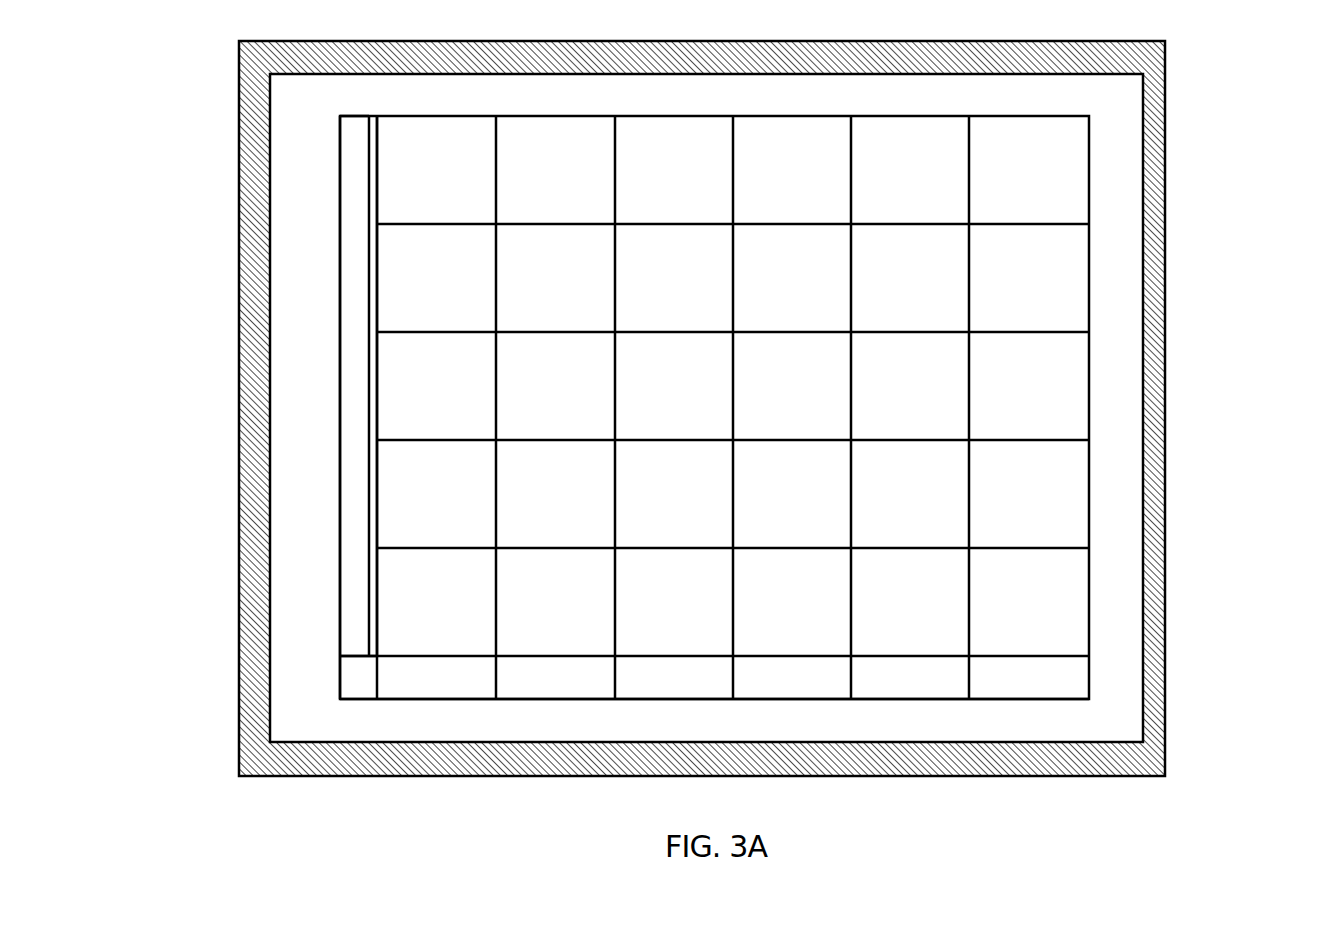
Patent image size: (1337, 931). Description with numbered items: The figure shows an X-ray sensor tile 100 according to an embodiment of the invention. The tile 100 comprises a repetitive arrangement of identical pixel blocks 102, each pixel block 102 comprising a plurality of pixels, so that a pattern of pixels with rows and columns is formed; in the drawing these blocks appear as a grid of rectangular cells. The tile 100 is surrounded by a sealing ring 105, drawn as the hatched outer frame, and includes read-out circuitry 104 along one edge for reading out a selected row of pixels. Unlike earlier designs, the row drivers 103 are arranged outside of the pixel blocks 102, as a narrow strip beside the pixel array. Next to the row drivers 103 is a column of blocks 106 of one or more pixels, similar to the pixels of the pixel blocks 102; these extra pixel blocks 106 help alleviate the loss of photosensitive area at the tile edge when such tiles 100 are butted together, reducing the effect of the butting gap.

The X-ray sensor tile 100 is at (1175, 287).
The pixel block 102 is at (1089, 487).
The row driver 103 is at (375, 155).
The read-out circuitry 104 is at (1089, 686).
The sealing ring 105 is at (245, 290).
The block of one or more pixels 106 is at (355, 438).